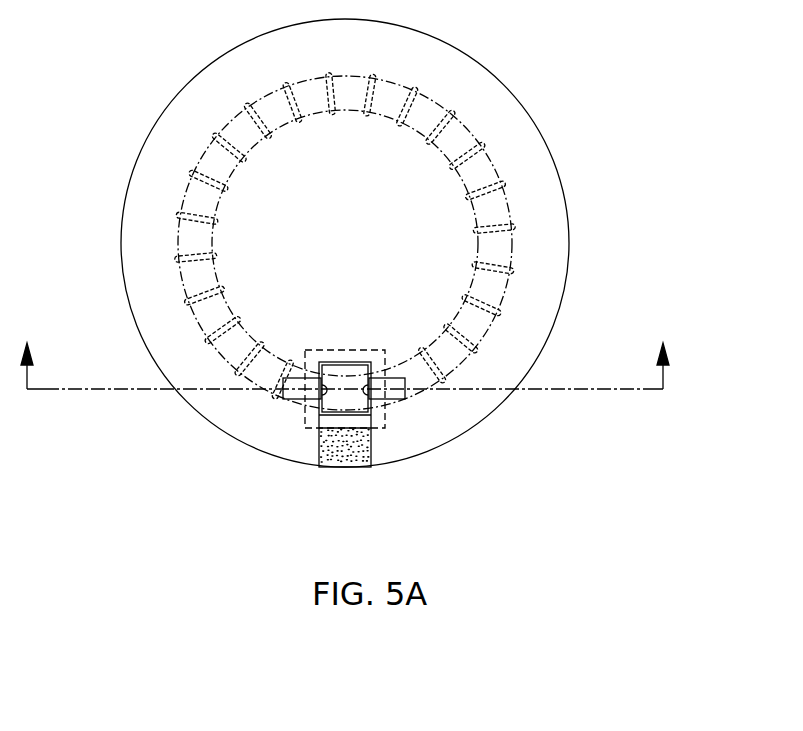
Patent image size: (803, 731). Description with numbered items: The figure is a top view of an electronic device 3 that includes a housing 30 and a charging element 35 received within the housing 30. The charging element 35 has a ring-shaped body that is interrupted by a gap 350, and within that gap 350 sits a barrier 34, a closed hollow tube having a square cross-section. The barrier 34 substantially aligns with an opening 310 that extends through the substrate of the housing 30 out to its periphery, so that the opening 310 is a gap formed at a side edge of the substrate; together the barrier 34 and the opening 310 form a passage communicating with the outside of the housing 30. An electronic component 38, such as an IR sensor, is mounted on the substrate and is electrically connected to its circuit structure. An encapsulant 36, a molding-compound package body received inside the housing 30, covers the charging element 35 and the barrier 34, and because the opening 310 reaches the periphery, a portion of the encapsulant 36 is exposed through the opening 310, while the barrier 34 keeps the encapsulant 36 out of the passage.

The electronic device 3 is at (653, 77).
The housing 30 is at (569, 243).
The charging element 35 is at (505, 198).
The barrier 34 is at (305, 428).
The encapsulant 36 is at (335, 453).
The opening 310 is at (368, 438).
The gap 350 is at (398, 401).
The electronic component 38 is at (301, 399).